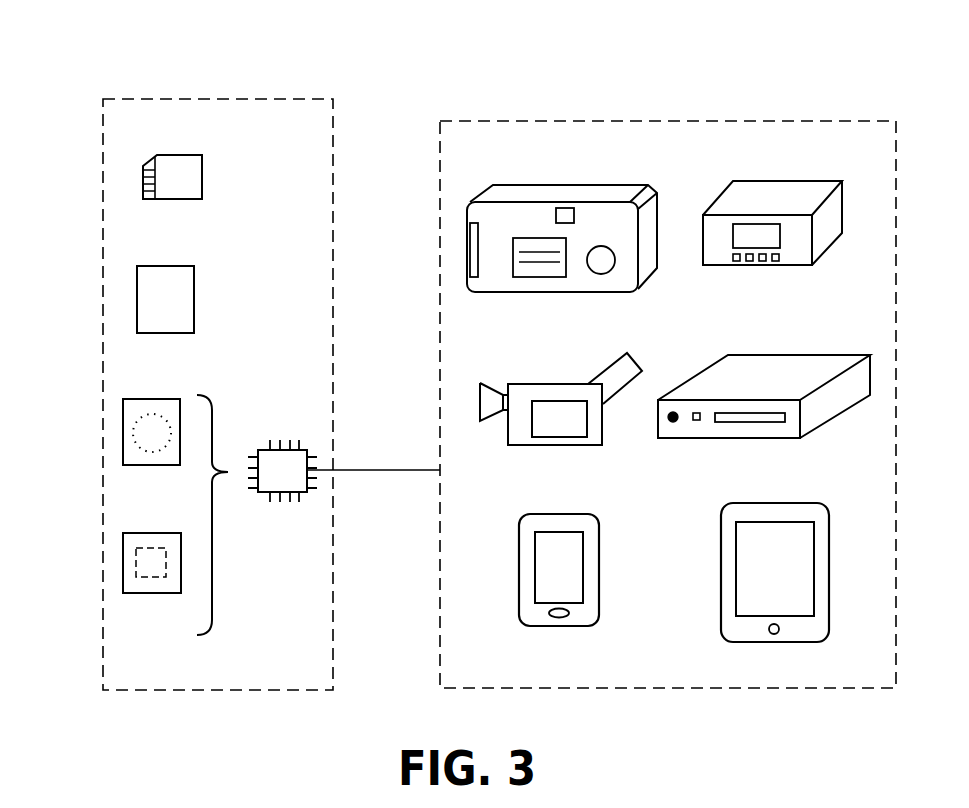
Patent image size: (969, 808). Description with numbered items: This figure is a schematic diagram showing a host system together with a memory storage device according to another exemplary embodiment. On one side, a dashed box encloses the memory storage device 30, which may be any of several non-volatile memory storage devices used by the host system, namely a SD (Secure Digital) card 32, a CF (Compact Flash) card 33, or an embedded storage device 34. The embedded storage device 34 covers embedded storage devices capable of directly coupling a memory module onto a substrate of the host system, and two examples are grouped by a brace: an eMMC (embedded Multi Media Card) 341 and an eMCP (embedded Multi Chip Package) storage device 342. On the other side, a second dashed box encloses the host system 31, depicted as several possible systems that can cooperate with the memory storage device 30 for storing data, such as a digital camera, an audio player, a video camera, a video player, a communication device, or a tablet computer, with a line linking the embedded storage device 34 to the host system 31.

The memory storage device 30 is at (207, 99).
The host system 31 is at (595, 120).
The SD card 32 is at (143, 182).
The CF card 33 is at (137, 300).
The embedded storage device 34 is at (281, 440).
The eMMC 341 is at (123, 433).
The eMCP storage device 342 is at (123, 565).